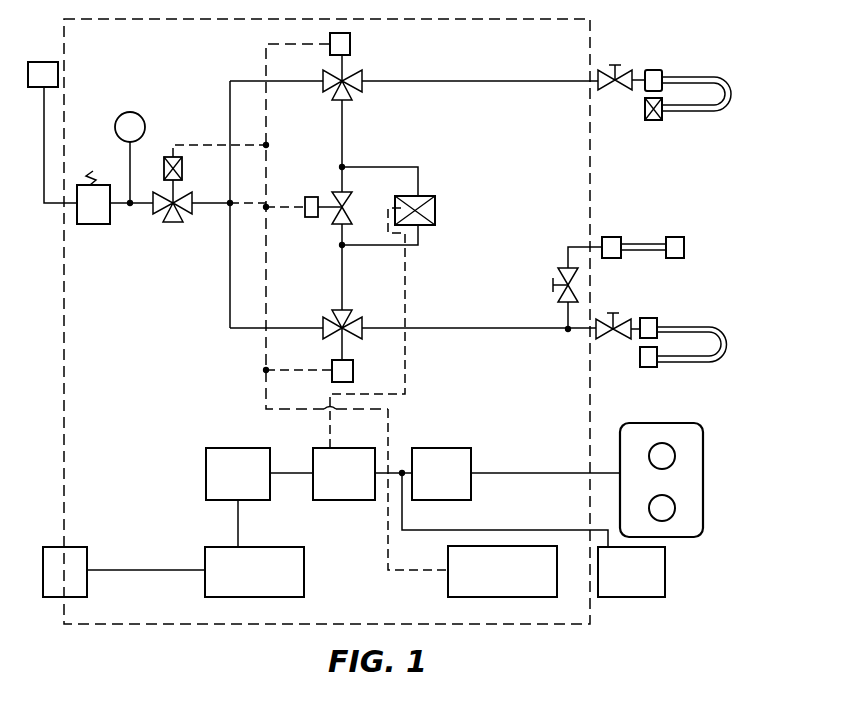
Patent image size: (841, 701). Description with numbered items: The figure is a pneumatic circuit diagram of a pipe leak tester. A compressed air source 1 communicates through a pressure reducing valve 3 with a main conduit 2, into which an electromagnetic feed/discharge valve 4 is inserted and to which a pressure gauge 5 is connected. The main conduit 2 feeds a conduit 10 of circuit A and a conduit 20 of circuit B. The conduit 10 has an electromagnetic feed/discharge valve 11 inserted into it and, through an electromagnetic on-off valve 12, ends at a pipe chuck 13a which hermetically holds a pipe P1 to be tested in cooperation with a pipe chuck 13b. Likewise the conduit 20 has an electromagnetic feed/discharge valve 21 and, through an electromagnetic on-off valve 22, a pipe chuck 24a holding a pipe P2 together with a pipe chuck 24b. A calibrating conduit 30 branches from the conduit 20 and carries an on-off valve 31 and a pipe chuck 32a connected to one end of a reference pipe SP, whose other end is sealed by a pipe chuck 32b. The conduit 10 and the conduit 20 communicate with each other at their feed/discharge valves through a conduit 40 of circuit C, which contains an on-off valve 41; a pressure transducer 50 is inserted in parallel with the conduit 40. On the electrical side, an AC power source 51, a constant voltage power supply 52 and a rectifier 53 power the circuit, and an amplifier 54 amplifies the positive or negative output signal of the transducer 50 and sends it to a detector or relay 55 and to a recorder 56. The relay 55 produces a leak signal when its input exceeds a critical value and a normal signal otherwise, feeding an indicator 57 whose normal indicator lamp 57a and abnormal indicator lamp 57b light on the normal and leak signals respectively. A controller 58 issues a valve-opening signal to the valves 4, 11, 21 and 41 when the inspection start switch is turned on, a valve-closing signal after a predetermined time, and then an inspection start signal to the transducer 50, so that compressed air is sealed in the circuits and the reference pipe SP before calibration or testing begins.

The compressed air source 1 is at (34, 89).
The main conduit 2 is at (116, 200).
The pressure reducing valve 3 is at (97, 224).
The electromagnetic feed/discharge valve 4 is at (186, 197).
The pressure gauge 5 is at (140, 119).
The conduit of circuit A 10 is at (230, 81).
The electromagnetic feed/discharge valve 11 is at (331, 90).
The electromagnetic on-off valve 12 is at (622, 70).
The pipe chuck 13a is at (660, 70).
The pipe chuck 13b is at (654, 120).
The pipe to be tested P1 is at (721, 77).
The conduit of circuit B 20 is at (230, 330).
The electromagnetic feed/discharge valve 21 is at (330, 318).
The electromagnetic on-off valve 22 is at (618, 343).
The pipe chuck 24a is at (649, 318).
The pipe chuck 24b is at (650, 367).
The pipe P2 is at (704, 327).
The calibrating conduit 30 is at (568, 312).
The on-off valve 31 is at (561, 268).
The pipe chuck 32a is at (607, 237).
The pipe chuck 32b is at (684, 258).
The reference pipe SP is at (651, 244).
The conduit of circuit C 40 is at (342, 273).
The on-off valve 41 is at (335, 195).
The pressure transducer 50 is at (428, 196).
The AC power source 51 is at (88, 544).
The constant voltage power supply 52 is at (207, 552).
The rectifier 53 is at (206, 468).
The amplifier 54 is at (337, 492).
The detector (relay) 55 is at (454, 450).
The recorder 56 is at (648, 585).
The indicator 57 is at (698, 427).
The normal indicator lamp 57a is at (675, 456).
The abnormal indicator lamp 57b is at (675, 508).
The controller 58 is at (455, 590).